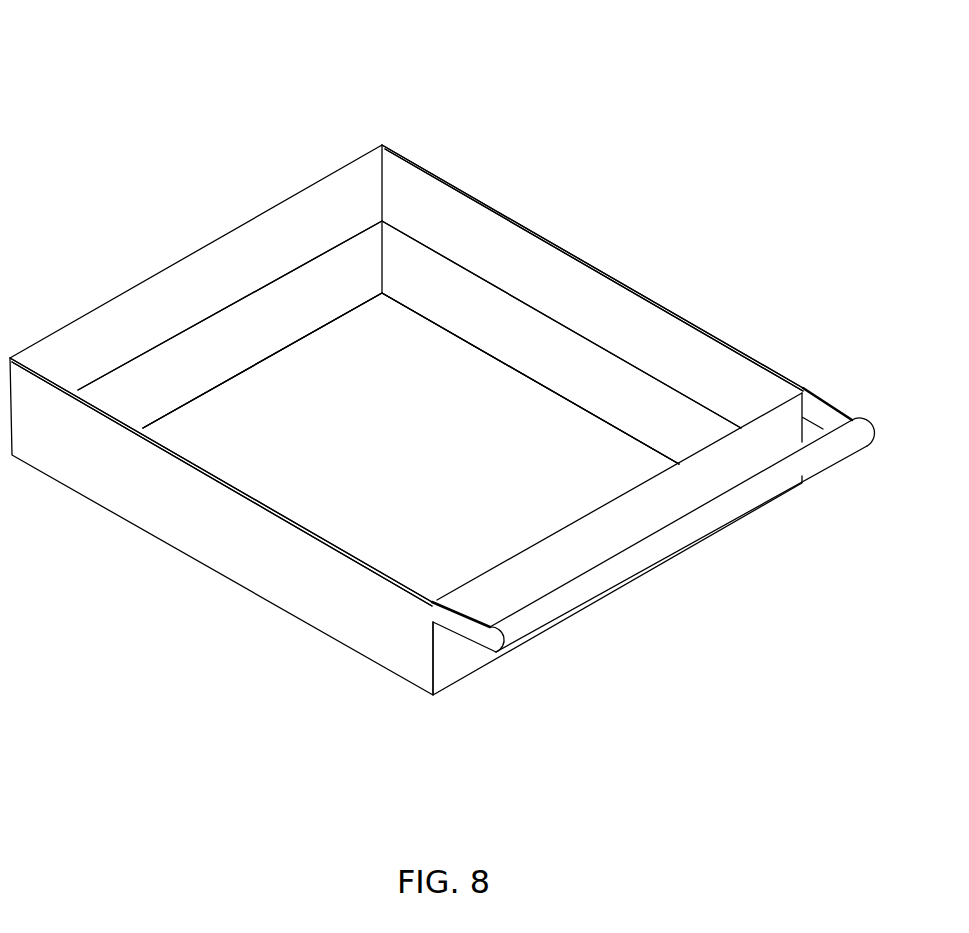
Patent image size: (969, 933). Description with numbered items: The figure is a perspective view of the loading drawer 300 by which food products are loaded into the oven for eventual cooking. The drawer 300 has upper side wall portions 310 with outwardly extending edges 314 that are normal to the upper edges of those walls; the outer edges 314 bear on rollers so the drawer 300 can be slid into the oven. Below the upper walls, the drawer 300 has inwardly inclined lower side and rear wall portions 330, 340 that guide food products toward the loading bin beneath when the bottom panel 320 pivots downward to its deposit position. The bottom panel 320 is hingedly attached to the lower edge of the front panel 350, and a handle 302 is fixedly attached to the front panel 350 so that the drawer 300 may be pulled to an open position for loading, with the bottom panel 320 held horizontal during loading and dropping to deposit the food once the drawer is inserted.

The drawer 300 is at (442, 383).
The handle 302 is at (697, 522).
The upper side wall portions 310 is at (643, 328).
The outwardly extending edges 314 is at (267, 512).
The bottom panel 320 is at (411, 385).
The lower side wall portion 330 is at (442, 293).
The rear wall portion 340 is at (285, 310).
The front panel 350 is at (453, 655).